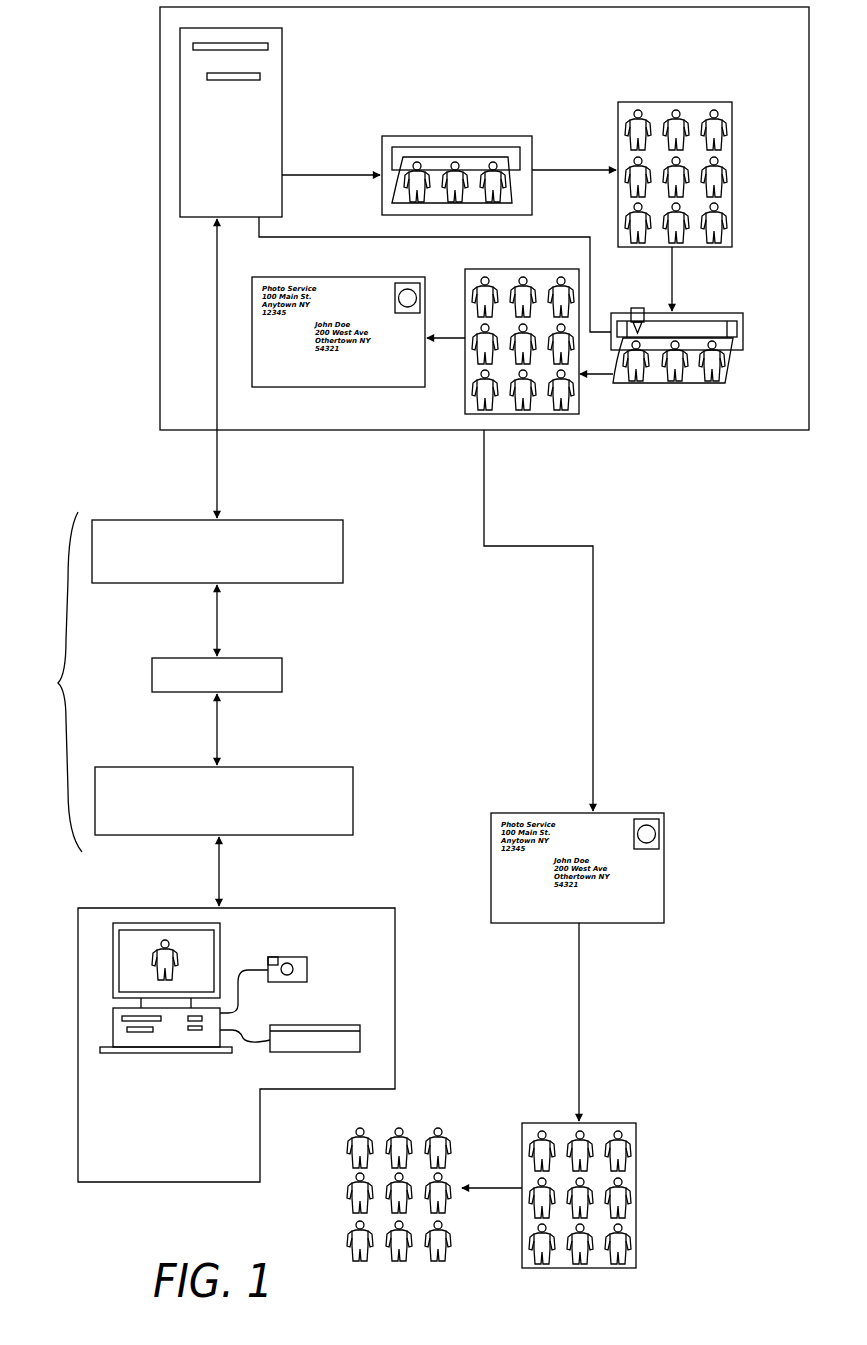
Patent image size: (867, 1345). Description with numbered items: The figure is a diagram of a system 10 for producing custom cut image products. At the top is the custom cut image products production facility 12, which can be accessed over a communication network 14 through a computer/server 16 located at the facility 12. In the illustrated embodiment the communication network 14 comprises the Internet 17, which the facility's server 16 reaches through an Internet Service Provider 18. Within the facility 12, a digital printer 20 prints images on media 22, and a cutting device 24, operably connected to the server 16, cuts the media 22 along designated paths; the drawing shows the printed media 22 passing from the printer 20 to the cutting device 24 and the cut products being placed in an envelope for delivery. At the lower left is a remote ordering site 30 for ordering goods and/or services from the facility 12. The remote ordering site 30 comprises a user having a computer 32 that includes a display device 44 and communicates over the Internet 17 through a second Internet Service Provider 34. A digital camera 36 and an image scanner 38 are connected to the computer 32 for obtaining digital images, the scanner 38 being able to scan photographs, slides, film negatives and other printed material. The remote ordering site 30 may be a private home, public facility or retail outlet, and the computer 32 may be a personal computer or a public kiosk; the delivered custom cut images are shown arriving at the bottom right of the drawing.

The system 10 is at (664, 611).
The production facility 12 is at (158, 62).
The communication network 14 is at (49, 682).
The computer/server 16 is at (280, 88).
The Internet 17 is at (262, 658).
The Internet Service Provider 18 is at (288, 520).
The digital printer 20 is at (462, 136).
The media 22 is at (660, 102).
The cutting device 24 is at (702, 313).
The remote ordering site 30 is at (287, 903).
The computer 32 is at (149, 1059).
The Internet Service Provider 34 is at (312, 767).
The digital camera 36 is at (300, 957).
The image scanner 38 is at (333, 1025).
The display device 44 is at (110, 953).